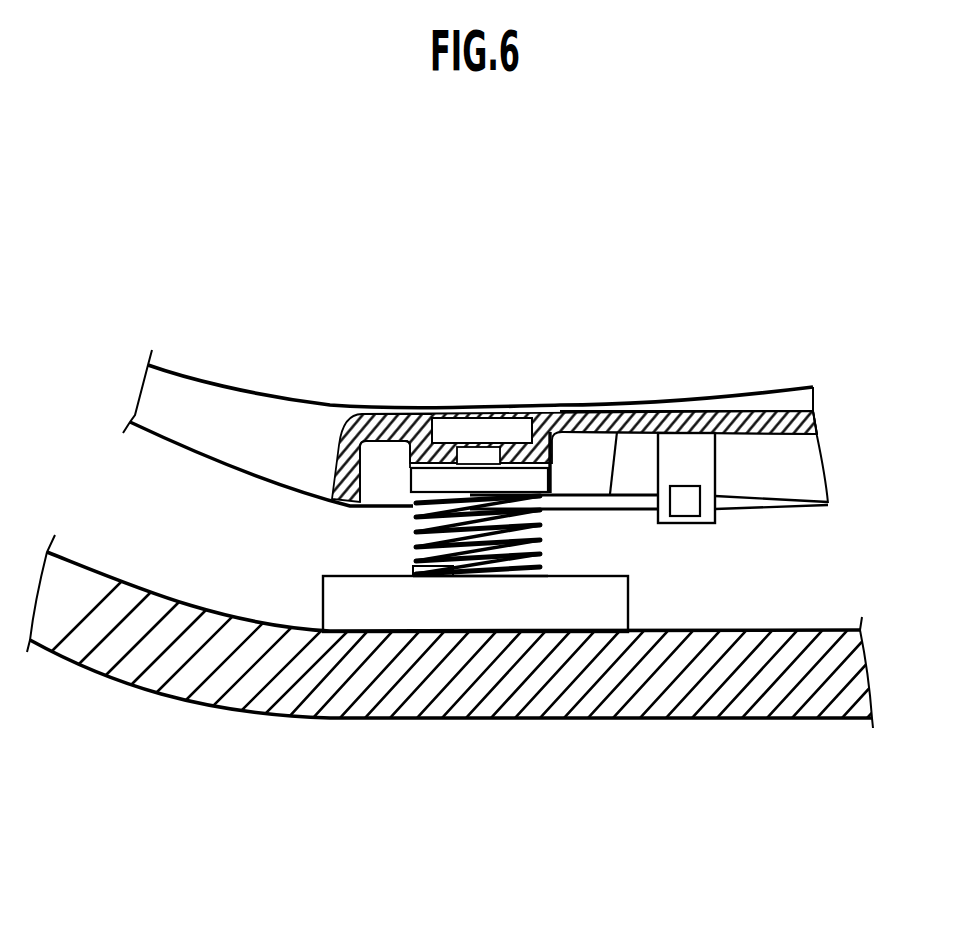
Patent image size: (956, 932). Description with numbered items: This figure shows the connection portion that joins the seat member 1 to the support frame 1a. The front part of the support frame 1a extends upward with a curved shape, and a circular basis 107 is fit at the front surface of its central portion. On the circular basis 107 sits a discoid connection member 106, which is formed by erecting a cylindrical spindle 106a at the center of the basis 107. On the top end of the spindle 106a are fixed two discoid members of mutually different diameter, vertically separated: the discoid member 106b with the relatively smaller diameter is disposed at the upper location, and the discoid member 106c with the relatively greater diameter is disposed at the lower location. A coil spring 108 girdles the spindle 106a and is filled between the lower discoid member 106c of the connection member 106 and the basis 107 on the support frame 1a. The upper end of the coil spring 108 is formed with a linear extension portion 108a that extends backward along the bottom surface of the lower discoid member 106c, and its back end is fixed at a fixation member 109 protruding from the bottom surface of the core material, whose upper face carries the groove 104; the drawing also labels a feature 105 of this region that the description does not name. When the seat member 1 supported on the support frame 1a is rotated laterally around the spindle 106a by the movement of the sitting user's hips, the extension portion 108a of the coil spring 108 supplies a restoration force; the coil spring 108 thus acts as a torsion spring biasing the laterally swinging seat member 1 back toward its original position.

The seat member 1 is at (202, 352).
The support frame 1a is at (114, 713).
The groove 104 is at (776, 414).
The recess 105 is at (479, 405).
The connection member 106 is at (524, 380).
The cylindrical spindle 106a is at (420, 566).
The discoid member 106b is at (440, 410).
The discoid member 106c is at (418, 479).
The circular basis 107 is at (557, 627).
The coil spring 108 is at (545, 545).
The linear extension portion 108a is at (628, 412).
The fixation member 109 is at (686, 514).